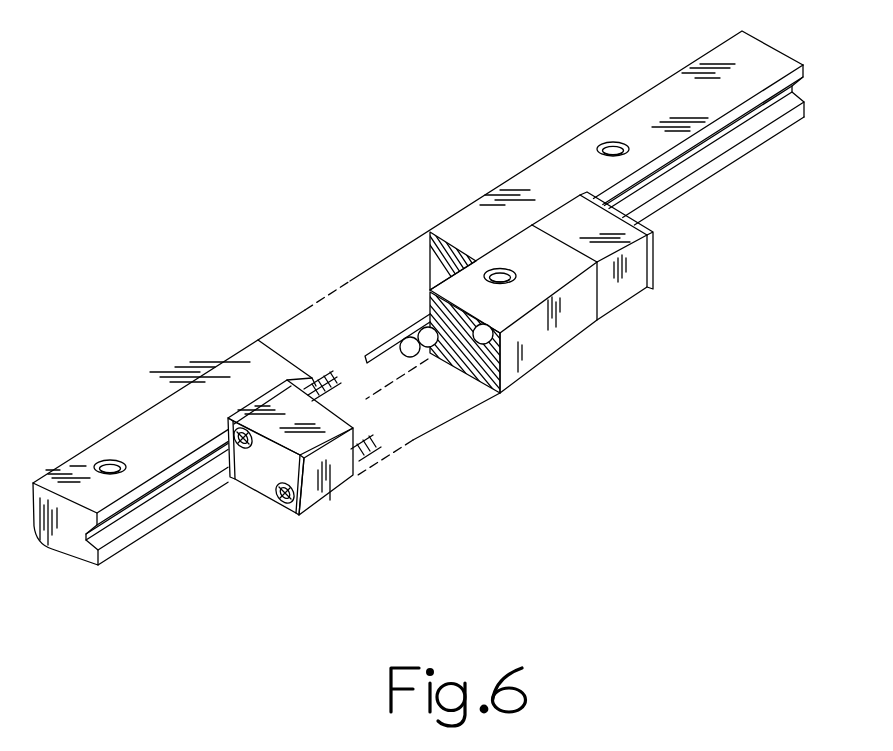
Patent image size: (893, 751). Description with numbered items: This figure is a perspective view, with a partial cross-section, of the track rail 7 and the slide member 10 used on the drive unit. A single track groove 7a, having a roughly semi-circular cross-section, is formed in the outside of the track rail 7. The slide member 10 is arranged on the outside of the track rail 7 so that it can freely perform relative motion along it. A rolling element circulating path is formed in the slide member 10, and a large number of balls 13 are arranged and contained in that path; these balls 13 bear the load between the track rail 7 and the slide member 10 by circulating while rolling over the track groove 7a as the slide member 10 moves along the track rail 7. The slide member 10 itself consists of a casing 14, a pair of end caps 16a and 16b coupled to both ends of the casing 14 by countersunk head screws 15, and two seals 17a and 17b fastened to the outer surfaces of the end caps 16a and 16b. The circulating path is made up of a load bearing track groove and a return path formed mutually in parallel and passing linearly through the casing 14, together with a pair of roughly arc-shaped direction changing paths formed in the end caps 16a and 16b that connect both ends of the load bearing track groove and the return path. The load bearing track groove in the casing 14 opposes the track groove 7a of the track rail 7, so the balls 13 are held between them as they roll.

The track rail 7 is at (163, 386).
The track groove 7a is at (115, 521).
The slide member 10 is at (670, 255).
The balls 13 is at (431, 346).
The casing 14 is at (540, 343).
The countersunk head screws 15 is at (243, 450).
The end cap 16a is at (333, 480).
The end cap 16b is at (623, 298).
The seal 17a is at (300, 500).
The seal 17b is at (657, 277).